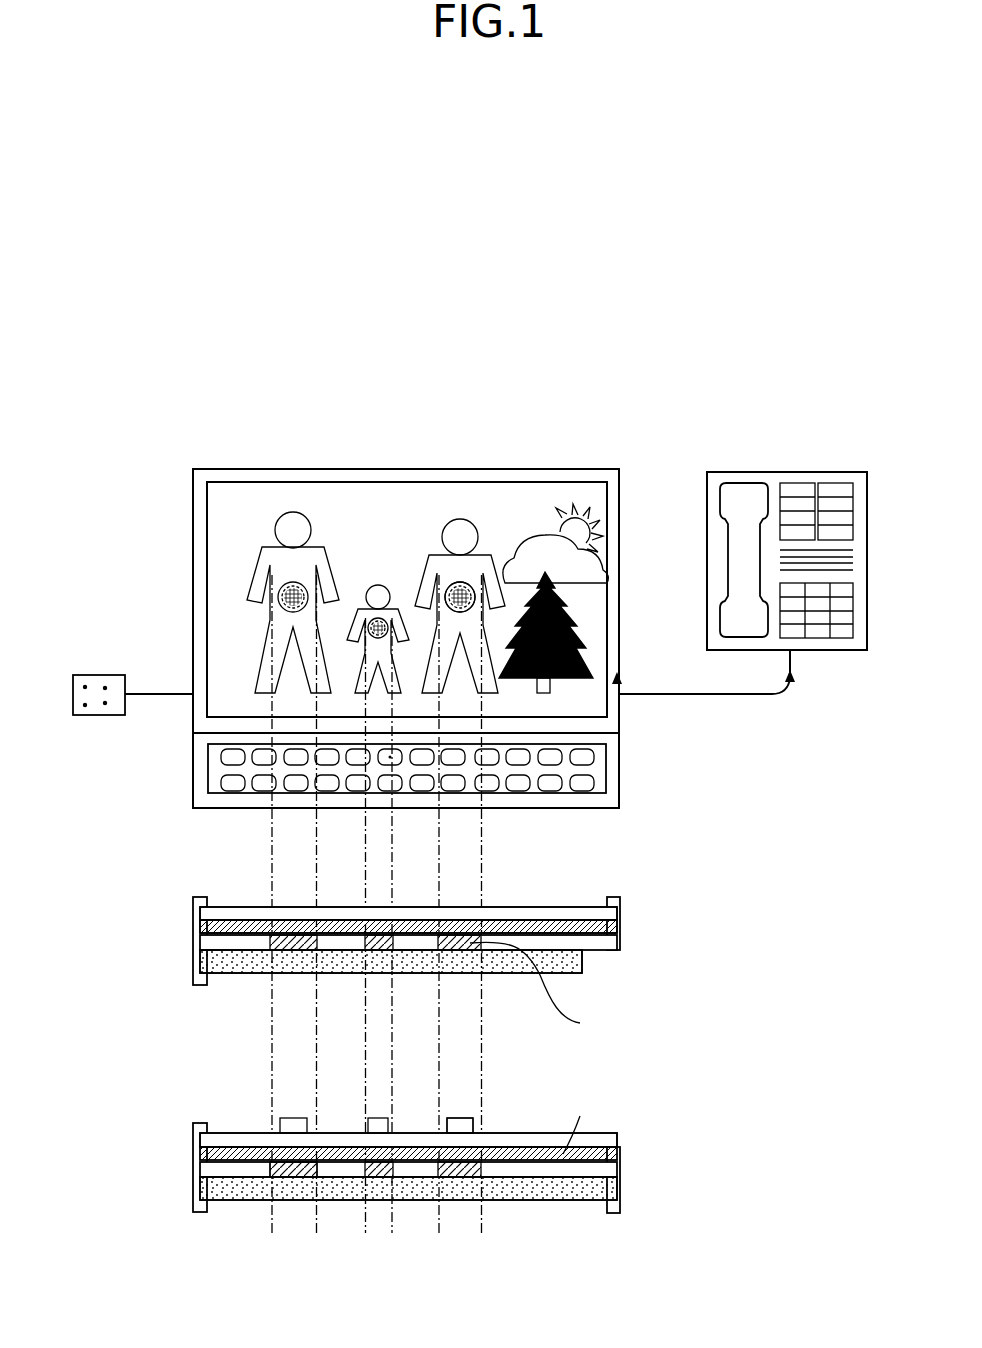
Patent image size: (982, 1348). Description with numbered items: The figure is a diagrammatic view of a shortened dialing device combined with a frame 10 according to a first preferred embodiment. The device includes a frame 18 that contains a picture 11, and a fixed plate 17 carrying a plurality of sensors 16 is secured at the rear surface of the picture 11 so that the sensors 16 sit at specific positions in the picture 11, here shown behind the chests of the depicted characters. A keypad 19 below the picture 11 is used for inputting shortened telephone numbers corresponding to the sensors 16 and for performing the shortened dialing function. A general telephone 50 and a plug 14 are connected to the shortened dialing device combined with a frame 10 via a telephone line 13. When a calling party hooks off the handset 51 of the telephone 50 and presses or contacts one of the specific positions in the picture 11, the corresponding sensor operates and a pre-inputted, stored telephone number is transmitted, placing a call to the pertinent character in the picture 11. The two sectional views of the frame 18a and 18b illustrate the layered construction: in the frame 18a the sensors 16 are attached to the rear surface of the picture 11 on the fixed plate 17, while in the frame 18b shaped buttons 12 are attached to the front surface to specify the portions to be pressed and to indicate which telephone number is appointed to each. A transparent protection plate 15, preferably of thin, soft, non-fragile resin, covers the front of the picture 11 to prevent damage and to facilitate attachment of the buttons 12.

The shortened dialing device combined with a frame 10 is at (270, 428).
The picture 11 is at (240, 535).
The buttons 12 is at (307, 596).
The telephone line 13 is at (683, 694).
The plug 14 is at (101, 715).
The transparent protection plate 15 is at (570, 906).
The sensors 16 is at (473, 596).
The fixed plate 17 is at (238, 978).
The frame 18 is at (192, 578).
The frame (rear-surface sensor arrangement) 18a is at (690, 946).
The frame (front-surface button arrangement) 18b is at (690, 1168).
The keypad 19 is at (624, 778).
The general telephone 50 is at (792, 445).
The handset 51 is at (747, 505).